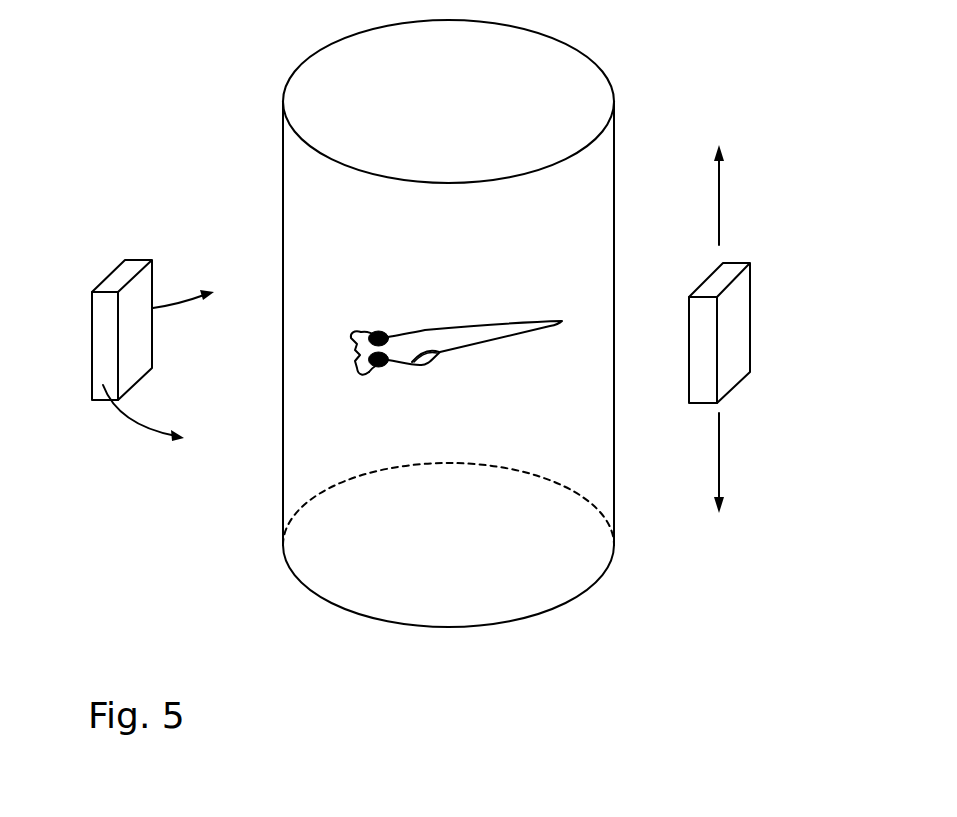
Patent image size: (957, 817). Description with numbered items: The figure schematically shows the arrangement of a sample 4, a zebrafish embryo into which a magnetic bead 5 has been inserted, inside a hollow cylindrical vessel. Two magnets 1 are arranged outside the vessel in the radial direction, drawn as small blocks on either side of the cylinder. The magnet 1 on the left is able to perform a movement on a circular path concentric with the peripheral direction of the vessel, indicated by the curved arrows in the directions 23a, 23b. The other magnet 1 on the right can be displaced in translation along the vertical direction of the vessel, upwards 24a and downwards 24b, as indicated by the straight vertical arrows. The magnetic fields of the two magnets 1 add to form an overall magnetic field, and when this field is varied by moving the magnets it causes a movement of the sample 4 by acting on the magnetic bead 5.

The magnet 1 is at (67, 335).
The sample 4 is at (420, 337).
The magnetic bead 5 is at (423, 362).
The direction of movement on a circular path 23a is at (117, 412).
The direction of movement on a circular path 23b is at (165, 298).
The upward translation direction 24a is at (720, 188).
The downward translation direction 24b is at (720, 460).